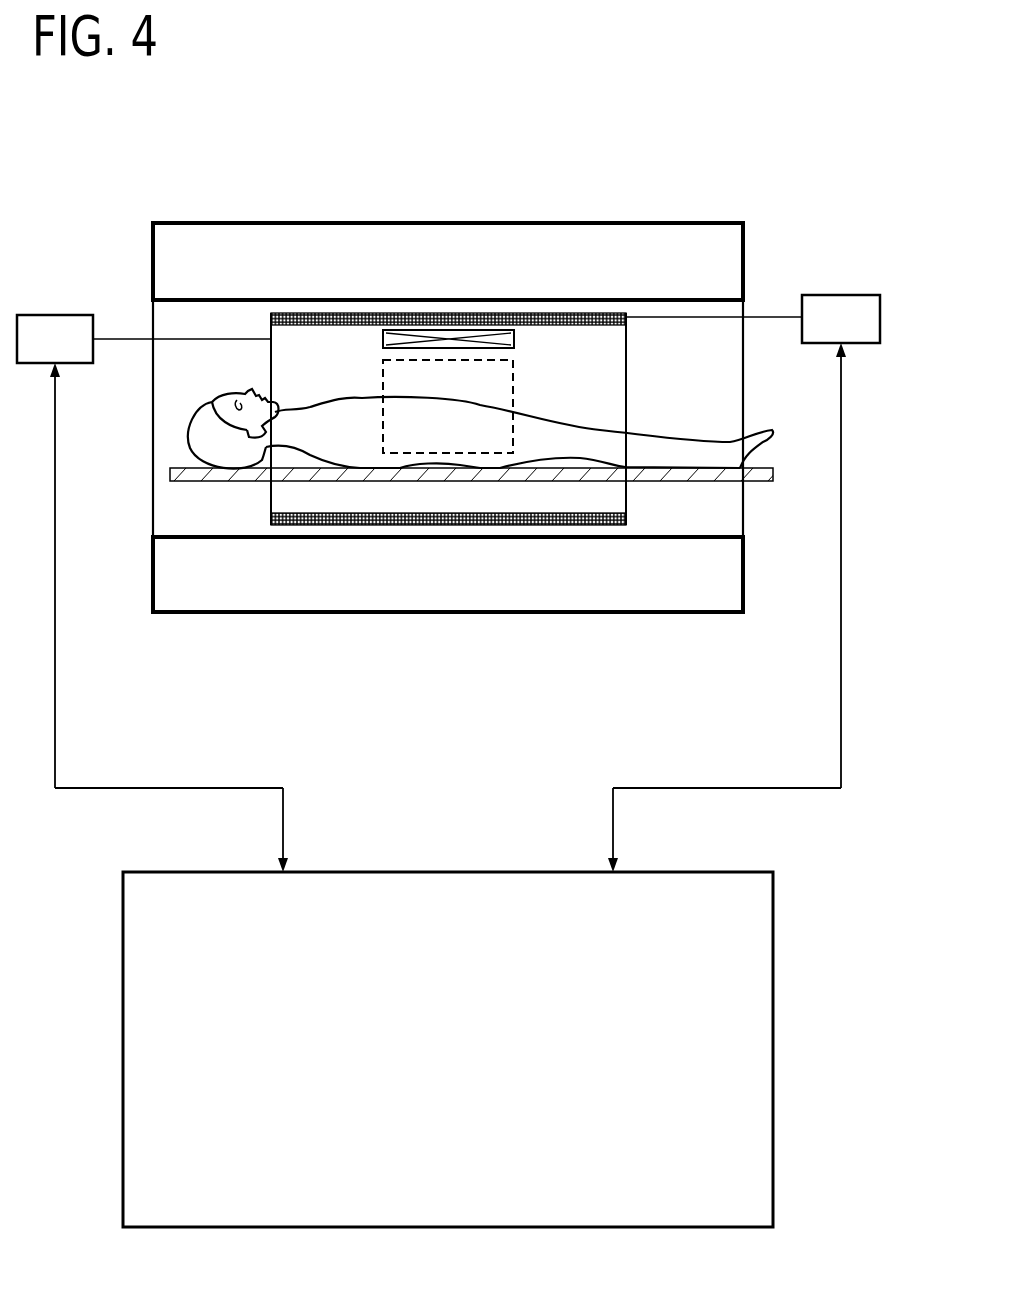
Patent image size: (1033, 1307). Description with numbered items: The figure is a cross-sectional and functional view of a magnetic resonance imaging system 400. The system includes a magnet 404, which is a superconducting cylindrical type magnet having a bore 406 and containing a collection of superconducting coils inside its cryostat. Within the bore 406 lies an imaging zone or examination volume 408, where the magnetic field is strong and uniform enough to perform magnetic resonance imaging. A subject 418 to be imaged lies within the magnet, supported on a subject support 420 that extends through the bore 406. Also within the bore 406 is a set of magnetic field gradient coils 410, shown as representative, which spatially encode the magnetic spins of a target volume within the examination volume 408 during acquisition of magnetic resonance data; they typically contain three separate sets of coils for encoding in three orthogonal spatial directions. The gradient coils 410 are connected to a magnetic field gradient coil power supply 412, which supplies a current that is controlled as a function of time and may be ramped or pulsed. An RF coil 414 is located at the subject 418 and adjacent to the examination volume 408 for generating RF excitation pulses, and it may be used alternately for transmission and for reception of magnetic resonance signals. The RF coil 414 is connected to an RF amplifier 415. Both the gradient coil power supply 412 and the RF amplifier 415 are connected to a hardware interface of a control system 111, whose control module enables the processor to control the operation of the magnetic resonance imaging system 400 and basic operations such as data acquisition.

The magnetic resonance imaging system 400 is at (660, 190).
The magnet 404 is at (744, 262).
The bore 406 is at (702, 379).
The imaging zone 408 is at (514, 388).
The magnetic field gradient coils 410 is at (326, 319).
The magnetic field gradient coil power supply 412 is at (863, 335).
The RF coil 414 is at (514, 339).
The RF amplifier 415 is at (77, 355).
The subject 418 is at (192, 422).
The subject support 420 is at (170, 474).
The control system 111 is at (444, 871).